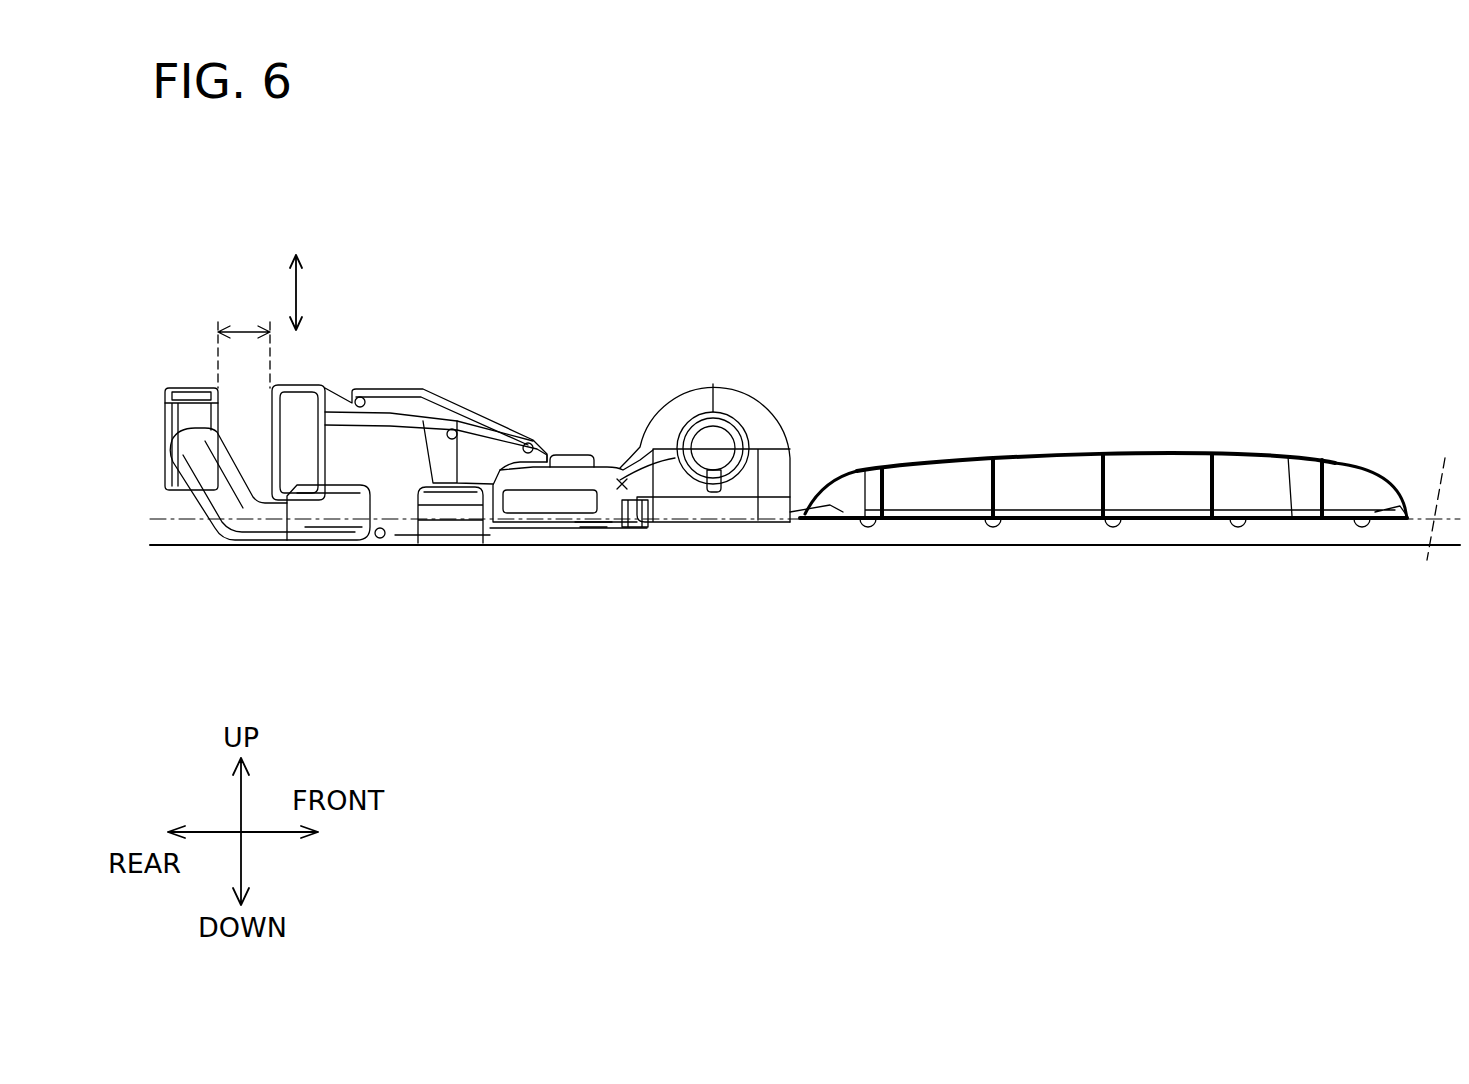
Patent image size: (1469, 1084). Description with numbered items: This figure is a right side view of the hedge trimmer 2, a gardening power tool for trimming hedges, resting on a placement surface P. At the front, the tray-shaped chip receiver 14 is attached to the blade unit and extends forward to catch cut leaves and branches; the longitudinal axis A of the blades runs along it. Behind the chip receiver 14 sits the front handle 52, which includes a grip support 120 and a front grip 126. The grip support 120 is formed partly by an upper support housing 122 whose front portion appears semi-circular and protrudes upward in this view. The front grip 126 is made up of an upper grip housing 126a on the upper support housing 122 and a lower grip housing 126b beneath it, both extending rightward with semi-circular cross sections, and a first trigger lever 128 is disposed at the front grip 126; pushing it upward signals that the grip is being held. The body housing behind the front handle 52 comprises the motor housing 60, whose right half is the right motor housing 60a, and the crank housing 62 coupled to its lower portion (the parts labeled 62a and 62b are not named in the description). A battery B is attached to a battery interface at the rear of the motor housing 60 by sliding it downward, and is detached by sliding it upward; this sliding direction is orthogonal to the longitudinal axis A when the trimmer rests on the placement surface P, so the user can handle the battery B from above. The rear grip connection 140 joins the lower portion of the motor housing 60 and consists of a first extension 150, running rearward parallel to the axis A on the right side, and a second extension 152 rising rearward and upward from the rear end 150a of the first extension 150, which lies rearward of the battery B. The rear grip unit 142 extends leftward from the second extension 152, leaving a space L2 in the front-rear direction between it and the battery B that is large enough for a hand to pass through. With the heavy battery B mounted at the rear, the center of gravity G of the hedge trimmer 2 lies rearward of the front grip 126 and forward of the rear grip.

The hedge trimmer 2 is at (1103, 429).
The chip receiver 14 is at (1183, 497).
The front handle 52 is at (757, 478).
The motor housing 60 is at (409, 416).
The right motor housing 60a is at (392, 398).
The crank housing 62 is at (572, 554).
The bracket of housing 62a is at (640, 527).
The base of housing 62b is at (603, 527).
The grip support 120 is at (767, 425).
The upper support housing 122 is at (773, 510).
The front grip 126 is at (721, 545).
The upper grip housing 126a is at (710, 440).
The lower grip housing 126b is at (675, 460).
The first trigger lever 128 is at (714, 470).
The rear grip connection 140 is at (270, 568).
The rear grip unit 142 is at (180, 432).
The first extension 150 is at (322, 530).
The rear end of the first extension 150a is at (262, 510).
The second extension 152 is at (202, 508).
The longitudinal axis A is at (1440, 495).
The battery B is at (300, 378).
The center of gravity G is at (620, 480).
The space L2 is at (245, 330).
The placement surface P is at (1437, 550).